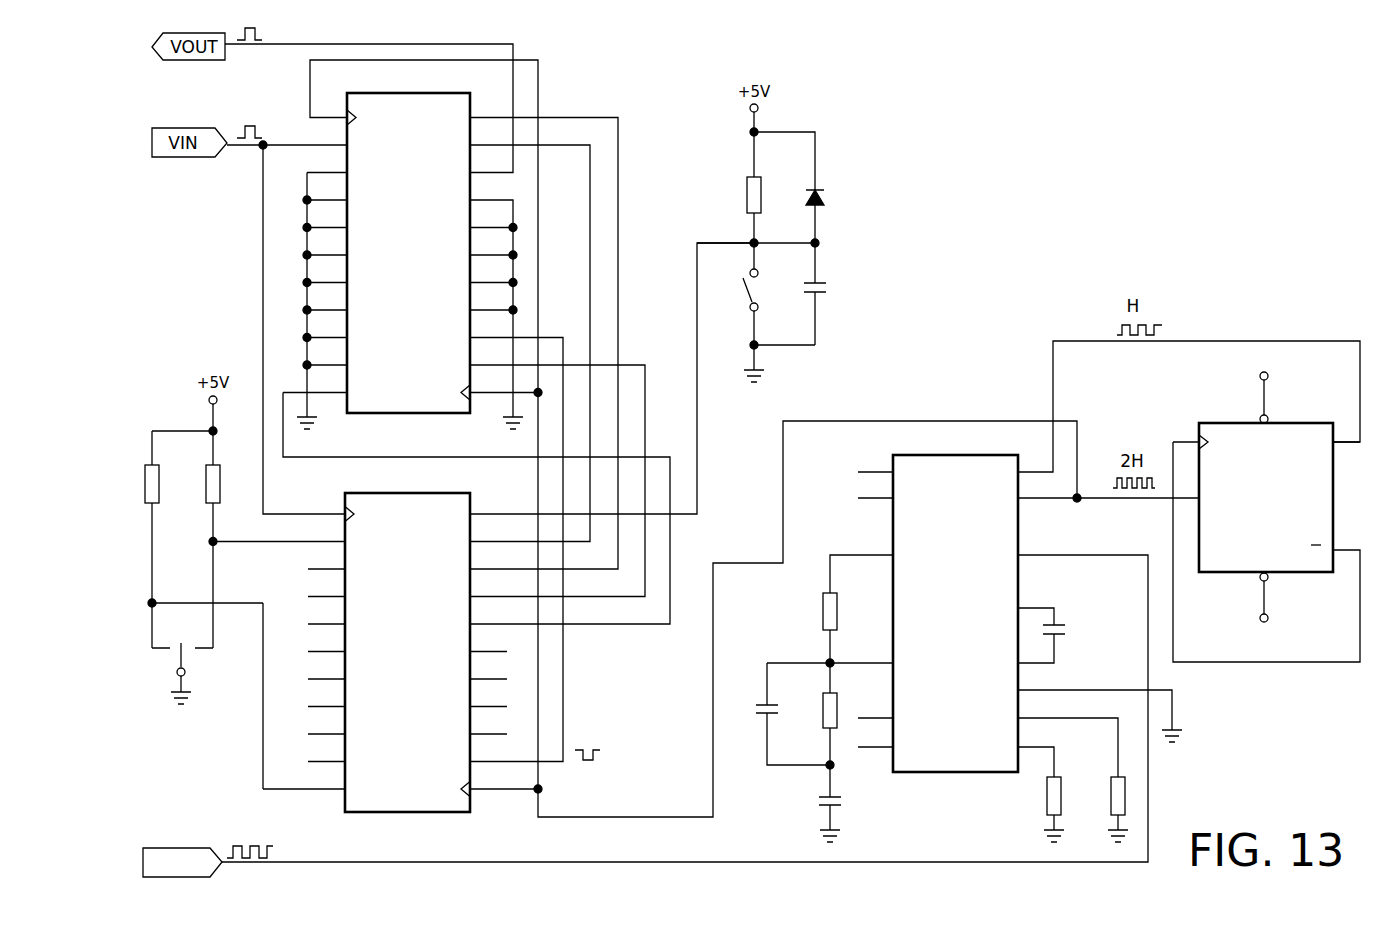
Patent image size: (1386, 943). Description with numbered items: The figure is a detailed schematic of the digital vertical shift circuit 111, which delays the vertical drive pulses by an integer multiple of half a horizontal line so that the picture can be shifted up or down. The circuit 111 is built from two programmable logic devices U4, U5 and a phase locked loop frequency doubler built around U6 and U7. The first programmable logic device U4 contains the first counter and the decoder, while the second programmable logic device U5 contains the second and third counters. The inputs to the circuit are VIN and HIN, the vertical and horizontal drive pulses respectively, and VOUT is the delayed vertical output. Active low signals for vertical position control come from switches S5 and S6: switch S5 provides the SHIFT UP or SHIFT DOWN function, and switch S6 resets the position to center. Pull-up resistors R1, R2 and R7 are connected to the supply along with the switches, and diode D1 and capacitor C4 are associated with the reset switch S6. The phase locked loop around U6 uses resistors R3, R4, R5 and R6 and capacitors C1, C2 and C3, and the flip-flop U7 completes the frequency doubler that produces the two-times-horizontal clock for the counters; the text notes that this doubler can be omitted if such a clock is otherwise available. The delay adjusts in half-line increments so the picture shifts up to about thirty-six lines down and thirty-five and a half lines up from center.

The digital vertical shift circuit 111 is at (317, 852).
The programmable logic device U4 is at (403, 255).
The programmable logic device U5 is at (407, 652).
The phase locked loop frequency doubler device U6 is at (952, 616).
The phase locked loop frequency doubler device U7 is at (1266, 505).
The resistor 100K R1 is at (177, 556).
The resistor 100K R2 is at (238, 556).
The resistor 470 R3 is at (848, 628).
The resistor 330 R4 is at (813, 714).
The resistor 150K R5 is at (1031, 794).
The resistor 100K R6 is at (1073, 780).
The resistor 100K R7 is at (731, 209).
The capacitor 100n C1 is at (773, 714).
The capacitor 1u C2 is at (819, 803).
The capacitor 1.3n C3 is at (1062, 635).
The capacitor 4.7u C4 is at (836, 294).
The diode 1N4148 D1 is at (851, 209).
The shift switch S5 is at (169, 675).
The reset switch S6 is at (758, 312).